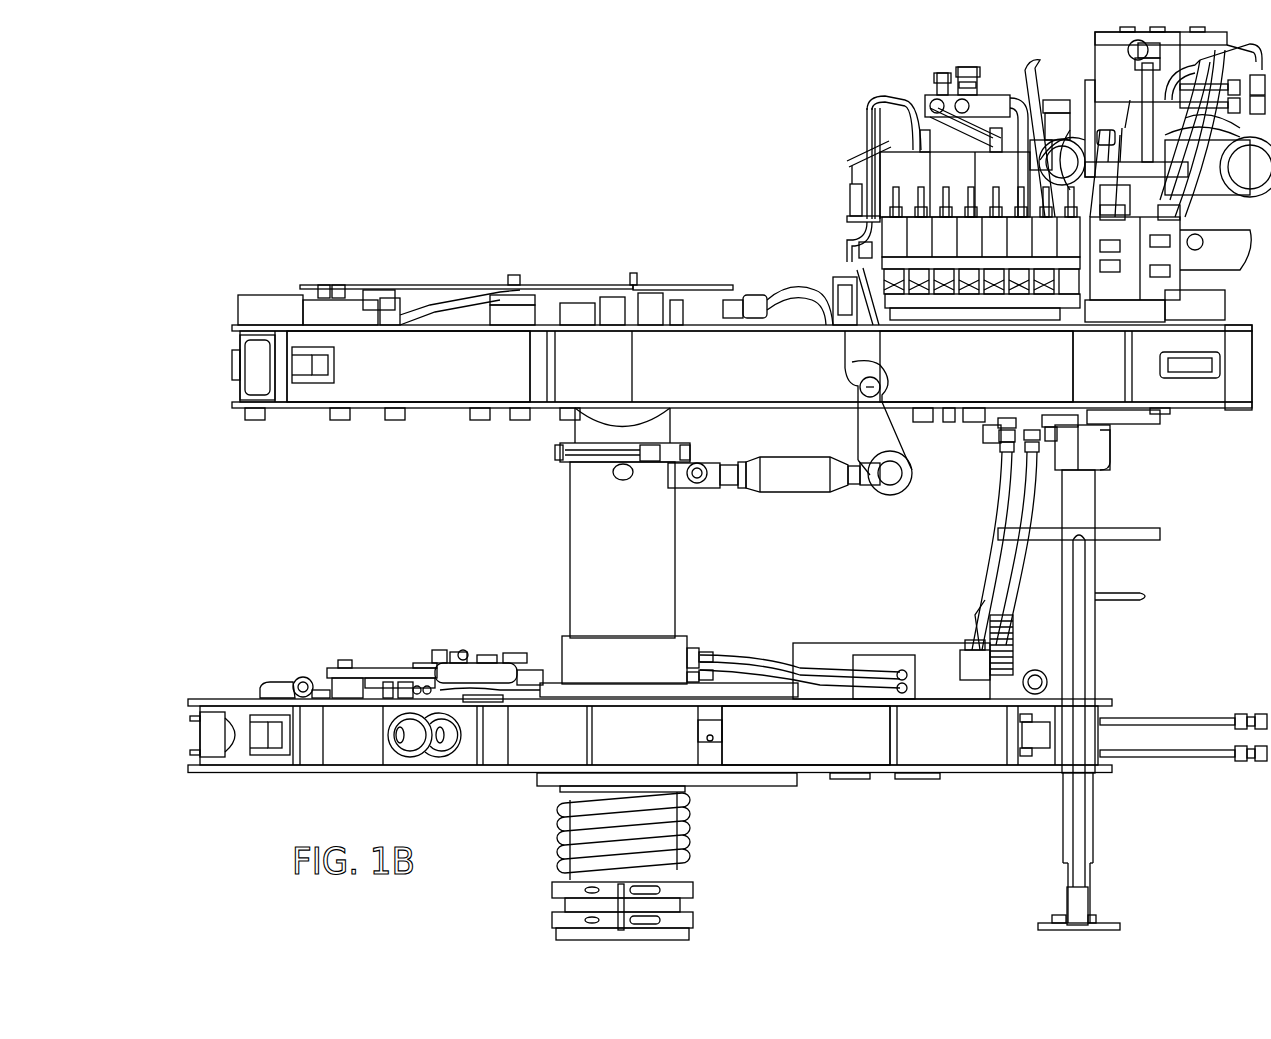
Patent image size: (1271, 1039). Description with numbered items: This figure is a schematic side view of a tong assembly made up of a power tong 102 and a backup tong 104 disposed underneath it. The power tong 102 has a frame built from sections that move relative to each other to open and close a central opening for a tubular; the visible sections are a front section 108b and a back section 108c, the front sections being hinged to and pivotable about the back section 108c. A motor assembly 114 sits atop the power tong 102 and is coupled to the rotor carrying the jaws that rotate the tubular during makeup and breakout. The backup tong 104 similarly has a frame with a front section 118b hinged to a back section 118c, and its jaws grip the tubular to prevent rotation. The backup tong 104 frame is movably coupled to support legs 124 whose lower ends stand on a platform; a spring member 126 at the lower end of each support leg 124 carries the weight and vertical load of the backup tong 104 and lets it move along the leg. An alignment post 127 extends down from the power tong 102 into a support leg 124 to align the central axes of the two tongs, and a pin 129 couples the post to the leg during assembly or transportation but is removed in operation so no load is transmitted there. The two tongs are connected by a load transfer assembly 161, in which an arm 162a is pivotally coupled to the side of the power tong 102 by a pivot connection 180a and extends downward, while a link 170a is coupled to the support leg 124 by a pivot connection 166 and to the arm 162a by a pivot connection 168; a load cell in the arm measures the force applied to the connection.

The power tong 102 is at (212, 346).
The backup tong 104 is at (160, 735).
The front section 108b is at (435, 377).
The back section 108c is at (989, 377).
The motor assembly 114 is at (1050, 58).
The front section 118b is at (380, 747).
The back section 118c is at (863, 747).
The support leg 124 is at (653, 583).
The spring member 126 is at (680, 840).
The alignment post 127 is at (565, 430).
The pin 129 is at (618, 474).
The load transfer assembly 161 is at (474, 553).
The arm 162a is at (906, 470).
The pivot connection 166 is at (697, 478).
The pivot connection 168 is at (887, 475).
The link 170a is at (852, 482).
The pivot connection 180a is at (868, 387).